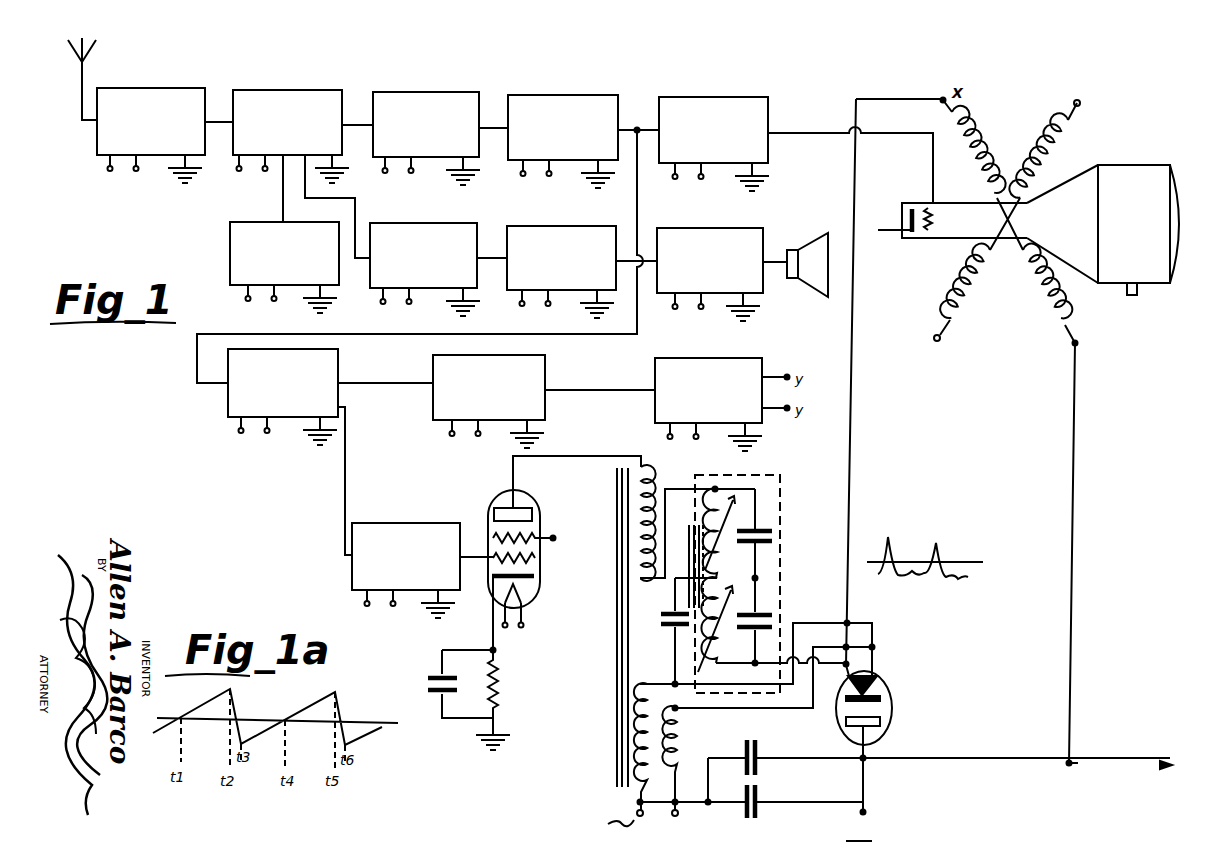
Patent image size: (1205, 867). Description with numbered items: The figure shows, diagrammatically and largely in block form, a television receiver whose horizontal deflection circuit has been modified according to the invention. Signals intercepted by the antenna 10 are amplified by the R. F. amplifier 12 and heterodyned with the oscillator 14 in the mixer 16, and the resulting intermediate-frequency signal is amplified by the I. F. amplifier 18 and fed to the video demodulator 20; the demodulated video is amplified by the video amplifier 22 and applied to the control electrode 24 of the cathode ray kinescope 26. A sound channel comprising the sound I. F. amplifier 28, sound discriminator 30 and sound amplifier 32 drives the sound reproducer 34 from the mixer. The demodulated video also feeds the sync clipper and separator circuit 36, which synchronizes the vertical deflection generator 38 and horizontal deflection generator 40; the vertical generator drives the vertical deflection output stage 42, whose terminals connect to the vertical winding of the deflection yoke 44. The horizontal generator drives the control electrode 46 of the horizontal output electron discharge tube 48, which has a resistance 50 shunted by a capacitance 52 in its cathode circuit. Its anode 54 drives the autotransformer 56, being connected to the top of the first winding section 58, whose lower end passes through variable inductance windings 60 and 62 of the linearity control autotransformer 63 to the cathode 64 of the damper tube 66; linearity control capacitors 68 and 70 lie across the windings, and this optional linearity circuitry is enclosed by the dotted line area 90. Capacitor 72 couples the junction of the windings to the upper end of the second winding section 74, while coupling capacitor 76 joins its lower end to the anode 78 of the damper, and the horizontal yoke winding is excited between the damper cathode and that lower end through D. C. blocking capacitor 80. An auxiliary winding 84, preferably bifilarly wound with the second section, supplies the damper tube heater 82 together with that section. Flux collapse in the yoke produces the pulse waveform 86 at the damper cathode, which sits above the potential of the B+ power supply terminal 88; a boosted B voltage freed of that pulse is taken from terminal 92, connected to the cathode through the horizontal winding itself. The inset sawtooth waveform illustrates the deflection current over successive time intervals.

The antenna 10 is at (97, 77).
The R. F. amplifier 12 is at (156, 88).
The oscillator 14 is at (230, 241).
The mixer 16 is at (282, 90).
The I. F. amplifier 18 is at (426, 92).
The video demodulator 20 is at (565, 95).
The video amplifier 22 is at (706, 97).
The control electrode 24 is at (933, 216).
The cathode ray kinescope 26 is at (1028, 227).
The sound I. F. amplifier 28 is at (444, 226).
The sound discriminator 30 is at (562, 226).
The sound amplifier 32 is at (698, 230).
The sound reproducer 34 is at (803, 278).
The sync clipper and separator circuit 36 is at (228, 402).
The vertical deflection generator 38 is at (545, 357).
The horizontal deflection generator 40 is at (408, 523).
The vertical deflection output stage 42 is at (749, 362).
The deflection yoke 44 is at (1016, 307).
The control electrode 46 is at (539, 567).
The horizontal output electron discharge tube 48 is at (543, 552).
The resistance 50 is at (498, 694).
The capacitance 52 is at (428, 678).
The anode 54 is at (486, 504).
The autotransformer 56 is at (624, 446).
The first winding section 58 is at (658, 577).
The variable inductance winding 60 is at (715, 570).
The variable inductance winding 62 is at (711, 652).
The linearity control autotransformer 63 is at (691, 518).
The cathode 64 is at (879, 702).
The damper tube 66 is at (892, 722).
The linearity control capacitor 68 is at (767, 530).
The linearity control capacitor 70 is at (765, 616).
The capacitor 72 is at (659, 622).
The second winding section 74 is at (648, 676).
The coupling capacitor 76 is at (759, 828).
The anode 78 is at (852, 728).
The D. C. blocking capacitor 80 is at (758, 778).
The damper tube heater 82 is at (875, 676).
The auxiliary winding 84 is at (681, 754).
The waveform 86 is at (860, 597).
The B+ power supply terminal 88 is at (868, 812).
The dotted line area 90 is at (721, 569).
The terminal 92 is at (1067, 766).